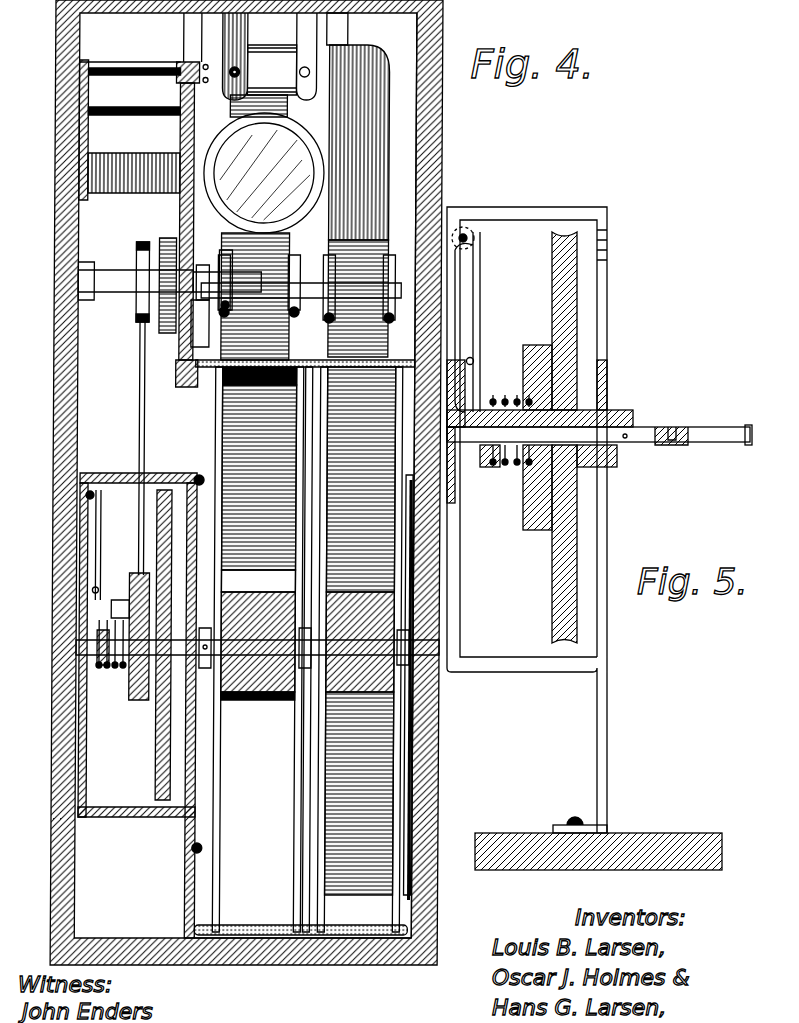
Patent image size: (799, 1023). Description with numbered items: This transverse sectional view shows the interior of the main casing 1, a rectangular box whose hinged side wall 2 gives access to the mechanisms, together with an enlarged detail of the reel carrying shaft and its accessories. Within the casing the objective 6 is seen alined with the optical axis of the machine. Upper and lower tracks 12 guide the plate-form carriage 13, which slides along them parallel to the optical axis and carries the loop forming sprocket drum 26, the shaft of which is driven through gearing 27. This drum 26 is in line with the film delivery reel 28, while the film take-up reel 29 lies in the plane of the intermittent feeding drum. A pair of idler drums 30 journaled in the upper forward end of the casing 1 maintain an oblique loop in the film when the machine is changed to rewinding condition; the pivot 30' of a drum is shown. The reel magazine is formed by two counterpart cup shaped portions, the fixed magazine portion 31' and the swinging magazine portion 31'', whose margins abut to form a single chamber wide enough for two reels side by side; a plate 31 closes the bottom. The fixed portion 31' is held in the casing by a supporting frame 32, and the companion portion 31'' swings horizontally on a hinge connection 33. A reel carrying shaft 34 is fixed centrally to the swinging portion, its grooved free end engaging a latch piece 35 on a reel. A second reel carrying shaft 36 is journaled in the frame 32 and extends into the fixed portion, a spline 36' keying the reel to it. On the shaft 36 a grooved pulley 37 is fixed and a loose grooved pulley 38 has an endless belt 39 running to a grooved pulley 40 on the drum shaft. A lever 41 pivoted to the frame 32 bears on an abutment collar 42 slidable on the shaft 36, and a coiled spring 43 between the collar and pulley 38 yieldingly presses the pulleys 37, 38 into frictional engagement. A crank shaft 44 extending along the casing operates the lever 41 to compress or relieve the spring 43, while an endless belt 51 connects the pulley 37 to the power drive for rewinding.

In FIG. 4, the main casing 1 is at (53, 30).
In FIG. 5, the main casing 1 is at (650, 846).
In FIG. 4, the hinged side wall 2 is at (440, 151).
In FIG. 4, the objective 6 is at (264, 173).
In FIG. 4, the tracks 12 is at (178, 62).
In FIG. 4, the carriage 13 is at (178, 212).
In FIG. 4, the sprocket drum 26 is at (340, 258).
In FIG. 4, the gearing 27 is at (148, 242).
In FIG. 4, the film delivery reel 28 is at (395, 394).
In FIG. 4, the film take-up reel 29 is at (296, 498).
In FIG. 4, the idler drums 30 is at (314, 126).
In FIG. 4, the lever pivot 30' is at (262, 70).
In FIG. 4, the cylinder base plate 31 is at (302, 968).
In FIG. 4, the fixed magazine portion 31' is at (255, 310).
In FIG. 4, the swinging magazine portion 31'' is at (305, 350).
In FIG. 4, the supporting frame 32 is at (137, 705).
In FIG. 5, the supporting frame 32 is at (452, 538).
In FIG. 4, the hinge connection 33 is at (316, 640).
In FIG. 4, the reel carrying shaft 34 is at (359, 781).
In FIG. 4, the latch piece 35 is at (258, 646).
In FIG. 4, the reel carrying shaft 36 is at (258, 680).
In FIG. 5, the reel carrying shaft 36 is at (599, 425).
In FIG. 4, the spline 36' is at (258, 577).
In FIG. 5, the spline 36' is at (668, 422).
In FIG. 4, the grooved pulley 37 is at (172, 518).
In FIG. 5, the grooved pulley 37 is at (552, 293).
In FIG. 4, the loose grooved pulley 38 is at (138, 583).
In FIG. 5, the loose grooved pulley 38 is at (527, 346).
In FIG. 4, the endless belt 39 is at (144, 445).
In FIG. 4, the grooved pulley 40 is at (135, 262).
In FIG. 4, the lever 41 is at (101, 528).
In FIG. 5, the lever 41 is at (480, 306).
In FIG. 4, the abutment collar 42 is at (106, 661).
In FIG. 5, the abutment collar 42 is at (486, 470).
In FIG. 4, the coiled spring 43 is at (120, 626).
In FIG. 5, the coiled spring 43 is at (500, 404).
In FIG. 4, the crank shaft 44 is at (93, 590).
In FIG. 5, the crank shaft 44 is at (476, 363).
In FIG. 4, the endless belt 51 is at (187, 653).